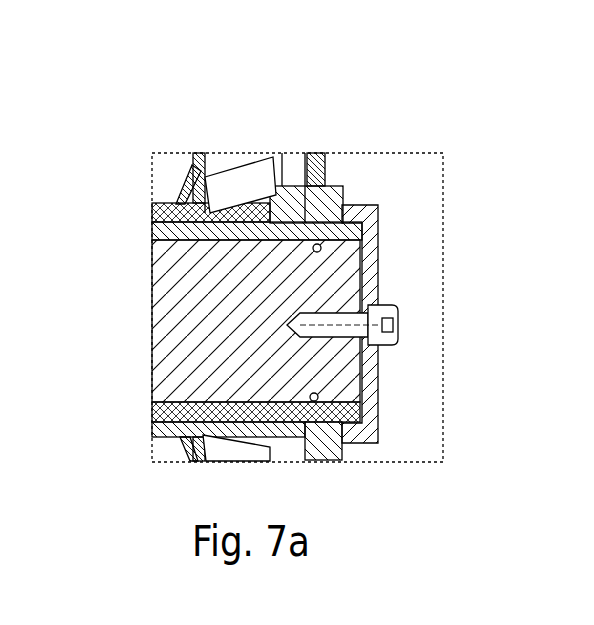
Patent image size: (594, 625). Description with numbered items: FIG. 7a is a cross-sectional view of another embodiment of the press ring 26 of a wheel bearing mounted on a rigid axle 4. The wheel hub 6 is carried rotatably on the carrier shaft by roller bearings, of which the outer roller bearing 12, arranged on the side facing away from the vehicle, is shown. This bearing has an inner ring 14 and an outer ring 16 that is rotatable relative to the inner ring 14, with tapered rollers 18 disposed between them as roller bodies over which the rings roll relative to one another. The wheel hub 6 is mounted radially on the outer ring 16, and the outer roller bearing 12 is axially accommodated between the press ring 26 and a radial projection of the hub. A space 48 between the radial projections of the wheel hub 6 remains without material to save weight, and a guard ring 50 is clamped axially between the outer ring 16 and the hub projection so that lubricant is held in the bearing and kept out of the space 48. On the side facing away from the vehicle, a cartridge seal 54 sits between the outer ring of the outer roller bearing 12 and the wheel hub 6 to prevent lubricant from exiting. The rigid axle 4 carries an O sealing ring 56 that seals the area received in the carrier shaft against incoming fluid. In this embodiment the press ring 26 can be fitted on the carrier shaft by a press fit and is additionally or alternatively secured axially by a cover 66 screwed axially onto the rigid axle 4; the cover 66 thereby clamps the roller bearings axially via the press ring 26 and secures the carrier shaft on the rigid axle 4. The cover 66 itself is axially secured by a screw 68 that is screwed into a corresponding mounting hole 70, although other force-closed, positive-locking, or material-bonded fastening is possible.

The outer roller bearing 12 is at (106, 100).
The rigid axle 4 is at (173, 291).
The wheel hub 6 is at (172, 226).
The space 48 is at (167, 182).
The guard ring 50 is at (190, 168).
The outer ring 16 is at (204, 176).
The tapered roller 18 is at (254, 160).
The inner ring 14 is at (298, 185).
The cartridge seal 54 is at (320, 170).
The press ring 26 is at (350, 190).
The O sealing ring 56 is at (380, 247).
The screw 68 is at (398, 322).
The cover 66 is at (378, 403).
The mounting hole 70 is at (287, 320).